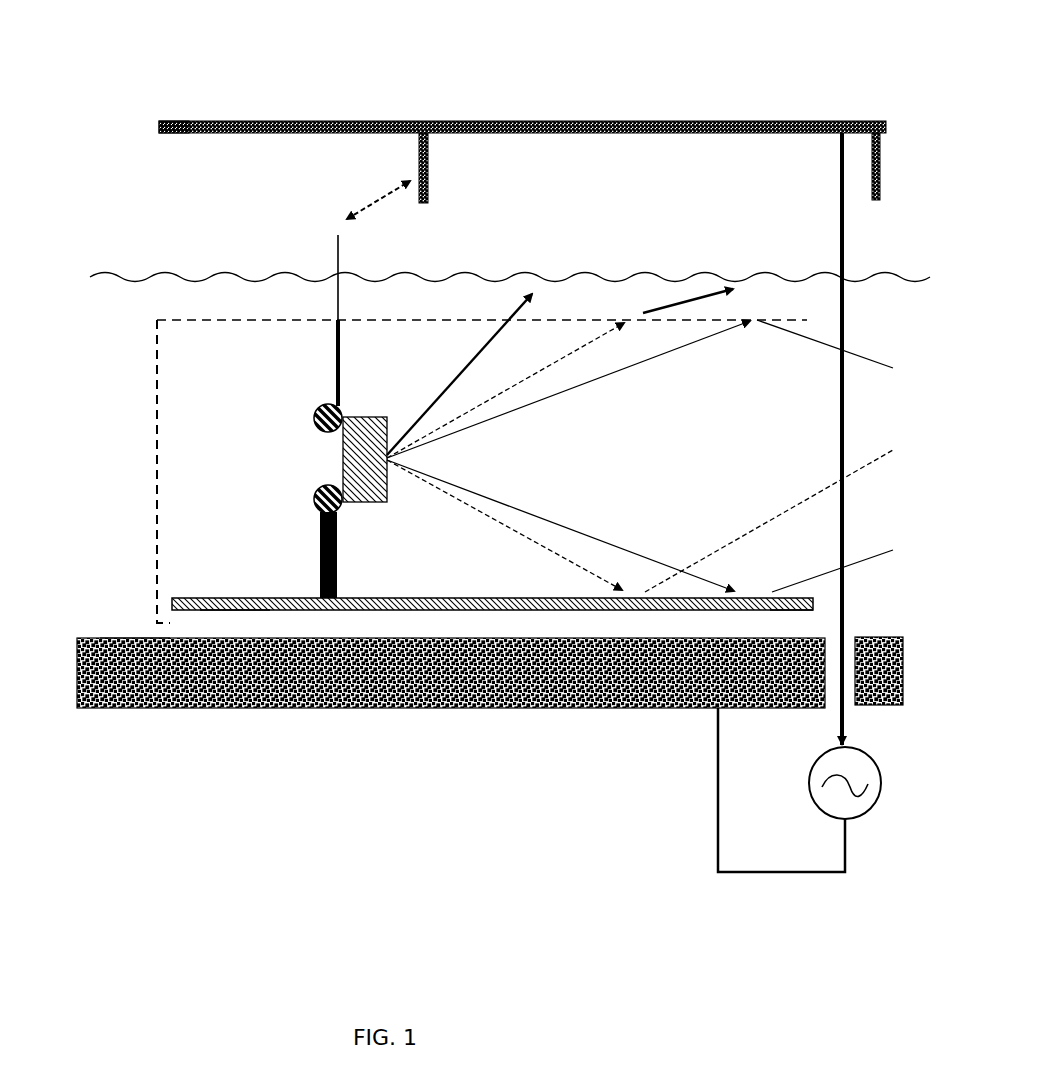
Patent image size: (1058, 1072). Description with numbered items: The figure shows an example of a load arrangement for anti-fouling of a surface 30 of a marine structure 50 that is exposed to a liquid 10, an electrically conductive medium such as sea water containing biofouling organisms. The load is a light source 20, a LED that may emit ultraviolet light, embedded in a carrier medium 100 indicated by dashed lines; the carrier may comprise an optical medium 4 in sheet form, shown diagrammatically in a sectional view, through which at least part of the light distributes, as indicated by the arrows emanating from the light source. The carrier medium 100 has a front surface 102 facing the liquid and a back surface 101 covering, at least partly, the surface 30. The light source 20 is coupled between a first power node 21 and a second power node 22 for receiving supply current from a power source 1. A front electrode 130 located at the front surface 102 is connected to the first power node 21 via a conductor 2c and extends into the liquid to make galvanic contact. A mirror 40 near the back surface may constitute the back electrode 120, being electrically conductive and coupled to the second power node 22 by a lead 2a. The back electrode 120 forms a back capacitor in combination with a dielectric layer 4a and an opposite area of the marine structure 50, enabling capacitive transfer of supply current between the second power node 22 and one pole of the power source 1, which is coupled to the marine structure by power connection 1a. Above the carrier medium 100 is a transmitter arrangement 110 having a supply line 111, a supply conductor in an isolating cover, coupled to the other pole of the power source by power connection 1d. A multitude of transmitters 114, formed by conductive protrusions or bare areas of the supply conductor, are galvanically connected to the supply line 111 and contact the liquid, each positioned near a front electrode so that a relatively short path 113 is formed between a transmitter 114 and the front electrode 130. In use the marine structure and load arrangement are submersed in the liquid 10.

The power source 1 is at (877, 799).
The power connection 1a is at (845, 858).
The power connection 1d is at (846, 246).
The lead 2a is at (340, 543).
The conductor 2c is at (340, 340).
The optical medium 4 is at (181, 410).
The dielectric layer 4a is at (809, 618).
The liquid 10 is at (640, 270).
The light source 20 is at (343, 460).
The first power node 21 is at (316, 418).
The second power node 22 is at (316, 498).
The surface 30 is at (136, 644).
The mirror 40 is at (558, 594).
The marine structure 50 is at (502, 680).
The carrier medium 100 is at (157, 340).
The back surface 101 is at (232, 624).
The front surface 102 is at (236, 314).
The transmitter arrangement 110 is at (366, 114).
The supply line 111 is at (158, 128).
The path 113 is at (372, 200).
The transmitter 114 is at (431, 158).
The back electrode 120 is at (230, 597).
The front electrode 130 is at (340, 244).